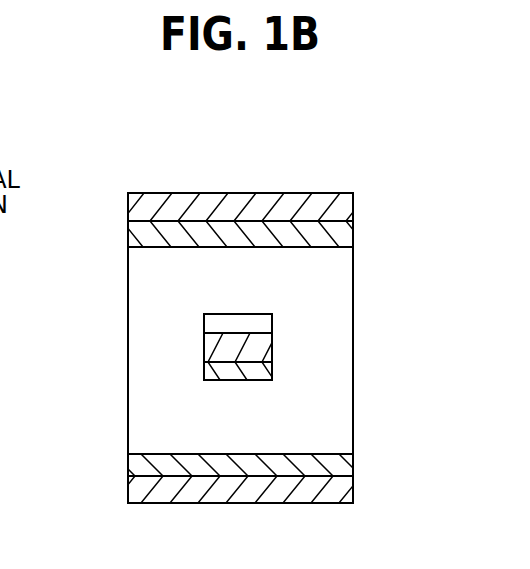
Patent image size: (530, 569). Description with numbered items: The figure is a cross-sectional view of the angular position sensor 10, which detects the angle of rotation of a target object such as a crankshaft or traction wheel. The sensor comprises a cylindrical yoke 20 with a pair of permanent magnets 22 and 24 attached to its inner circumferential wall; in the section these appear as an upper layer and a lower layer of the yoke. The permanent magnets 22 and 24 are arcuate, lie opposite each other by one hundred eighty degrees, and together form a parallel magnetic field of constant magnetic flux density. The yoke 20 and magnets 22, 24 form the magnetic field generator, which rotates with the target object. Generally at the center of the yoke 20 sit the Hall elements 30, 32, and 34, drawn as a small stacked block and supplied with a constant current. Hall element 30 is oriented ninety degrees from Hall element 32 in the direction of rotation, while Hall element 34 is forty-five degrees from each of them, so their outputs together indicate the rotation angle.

The angular position sensor 10 is at (270, 183).
The cylindrical yoke 20 is at (233, 207).
The permanent magnet 22 is at (130, 233).
The permanent magnet 24 is at (135, 468).
The Hall element 30 is at (212, 323).
The Hall element 32 is at (203, 372).
The Hall element 34 is at (208, 345).